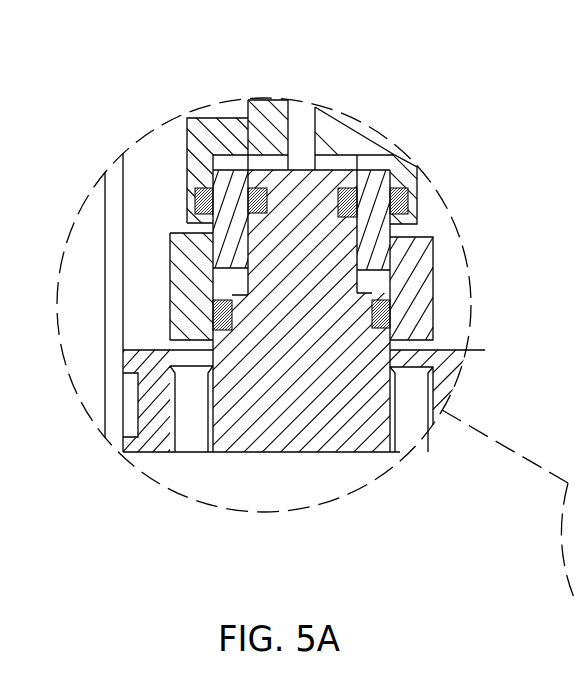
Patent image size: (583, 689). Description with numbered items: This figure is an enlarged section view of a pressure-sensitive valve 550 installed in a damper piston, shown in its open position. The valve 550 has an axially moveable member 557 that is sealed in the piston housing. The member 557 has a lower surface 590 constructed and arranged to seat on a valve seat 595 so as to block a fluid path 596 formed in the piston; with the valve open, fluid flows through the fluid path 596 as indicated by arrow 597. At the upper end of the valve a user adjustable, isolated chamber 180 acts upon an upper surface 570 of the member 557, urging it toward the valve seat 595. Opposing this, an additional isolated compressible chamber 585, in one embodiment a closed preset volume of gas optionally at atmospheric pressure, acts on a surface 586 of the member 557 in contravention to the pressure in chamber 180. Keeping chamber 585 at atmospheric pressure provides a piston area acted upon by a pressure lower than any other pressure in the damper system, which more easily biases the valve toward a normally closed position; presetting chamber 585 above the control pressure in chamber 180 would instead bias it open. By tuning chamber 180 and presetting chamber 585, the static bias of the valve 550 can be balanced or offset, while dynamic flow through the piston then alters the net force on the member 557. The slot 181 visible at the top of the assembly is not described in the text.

The user adjustable isolated chamber 180 is at (235, 156).
The slot 181 is at (305, 117).
The upper surface 570 is at (393, 153).
The valve 550 is at (445, 177).
The axially moveable member 557 is at (418, 253).
The arrow 597 is at (456, 320).
The isolated compressible chamber 585 is at (228, 284).
The surface 586 is at (233, 277).
The lower surface 590 is at (215, 390).
The valve seat 595 is at (178, 417).
The fluid path 596 is at (203, 370).